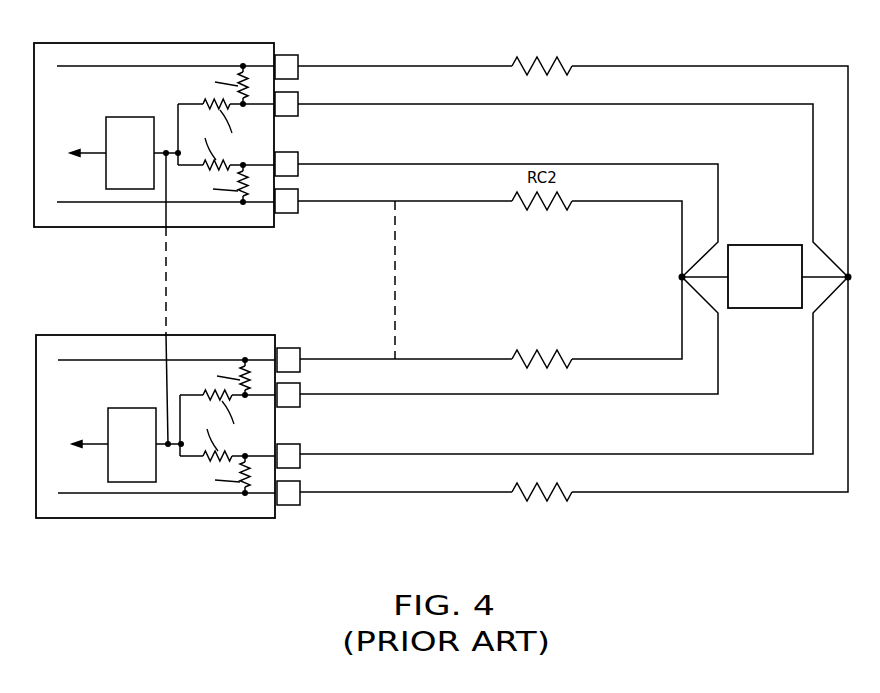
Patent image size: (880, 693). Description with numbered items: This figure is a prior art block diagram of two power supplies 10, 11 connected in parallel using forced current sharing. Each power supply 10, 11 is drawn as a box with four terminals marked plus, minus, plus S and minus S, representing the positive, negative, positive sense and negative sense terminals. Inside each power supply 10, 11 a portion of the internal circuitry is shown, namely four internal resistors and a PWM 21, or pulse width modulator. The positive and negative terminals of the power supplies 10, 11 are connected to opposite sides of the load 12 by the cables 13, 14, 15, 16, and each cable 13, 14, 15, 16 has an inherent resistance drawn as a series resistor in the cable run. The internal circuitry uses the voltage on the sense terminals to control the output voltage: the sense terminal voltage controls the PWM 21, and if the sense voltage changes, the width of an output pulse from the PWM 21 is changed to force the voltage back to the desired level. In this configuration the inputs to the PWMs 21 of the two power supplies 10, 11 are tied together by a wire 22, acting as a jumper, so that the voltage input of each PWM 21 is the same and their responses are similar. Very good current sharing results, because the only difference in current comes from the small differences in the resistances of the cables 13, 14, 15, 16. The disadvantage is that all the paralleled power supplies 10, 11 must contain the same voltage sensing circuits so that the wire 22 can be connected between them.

The power supply 10 is at (257, 227).
The power supply 11 is at (257, 335).
The load 12 is at (763, 308).
The cable 13 is at (410, 65).
The cable 14 is at (422, 210).
The cable 15 is at (417, 492).
The cable 16 is at (413, 358).
The PWM (pulse width modulator) 21 is at (114, 117).
The wire 22 is at (167, 252).